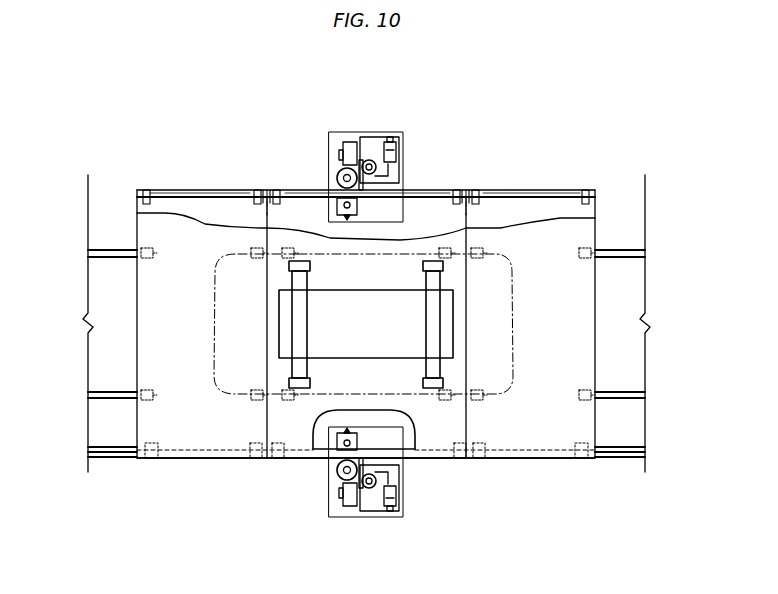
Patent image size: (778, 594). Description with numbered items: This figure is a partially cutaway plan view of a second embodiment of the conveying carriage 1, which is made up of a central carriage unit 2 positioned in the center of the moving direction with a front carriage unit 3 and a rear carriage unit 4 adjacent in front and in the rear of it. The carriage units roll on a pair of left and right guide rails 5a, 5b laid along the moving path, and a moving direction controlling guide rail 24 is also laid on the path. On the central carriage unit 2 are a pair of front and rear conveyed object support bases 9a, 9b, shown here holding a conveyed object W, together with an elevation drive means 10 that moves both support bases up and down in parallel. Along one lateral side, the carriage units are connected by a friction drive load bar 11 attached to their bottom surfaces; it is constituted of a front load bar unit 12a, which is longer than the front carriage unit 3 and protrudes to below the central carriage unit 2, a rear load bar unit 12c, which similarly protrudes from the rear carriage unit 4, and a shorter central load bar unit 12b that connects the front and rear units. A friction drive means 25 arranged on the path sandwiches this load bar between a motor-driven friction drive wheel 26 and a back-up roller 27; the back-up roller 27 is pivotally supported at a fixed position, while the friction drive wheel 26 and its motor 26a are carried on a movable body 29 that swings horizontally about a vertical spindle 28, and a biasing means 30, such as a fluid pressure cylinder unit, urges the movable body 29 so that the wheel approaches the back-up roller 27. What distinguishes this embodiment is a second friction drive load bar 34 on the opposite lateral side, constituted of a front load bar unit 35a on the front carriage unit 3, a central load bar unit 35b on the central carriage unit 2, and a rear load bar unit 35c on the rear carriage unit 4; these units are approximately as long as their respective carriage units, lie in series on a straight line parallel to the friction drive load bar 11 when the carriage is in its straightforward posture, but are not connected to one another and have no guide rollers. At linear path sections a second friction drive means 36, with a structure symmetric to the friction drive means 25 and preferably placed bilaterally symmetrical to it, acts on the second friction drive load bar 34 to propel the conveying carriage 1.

The conveying carriage 1 is at (135, 290).
The central carriage unit 2 is at (273, 368).
The front carriage unit 3 is at (140, 330).
The rear carriage unit 4 is at (585, 293).
The guide rail 5a is at (130, 391).
The guide rail 5b is at (130, 248).
The conveyed object support base 9a is at (298, 305).
The conveyed object support base 9b is at (436, 310).
The elevation drive means 10 is at (355, 336).
The friction drive load bar 11 is at (233, 465).
The front load bar unit 12a is at (184, 460).
The central load bar unit 12b is at (363, 452).
The rear load bar unit 12c is at (540, 460).
The moving direction controlling guide rail 24 is at (110, 459).
The friction drive means 25 is at (359, 527).
The friction drive wheel 26 is at (340, 178).
The motor 26a is at (348, 140).
The back-up roller 27 is at (333, 207).
The vertical spindle 28 is at (372, 160).
The movable body 29 is at (366, 183).
The biasing means 30 is at (398, 155).
The second friction drive load bar 34 is at (170, 186).
The front load bar unit 35a is at (198, 192).
The central load bar unit 35b is at (418, 192).
The rear load bar unit 35c is at (520, 191).
The second friction drive means 36 is at (361, 130).
The workpiece W is at (213, 352).